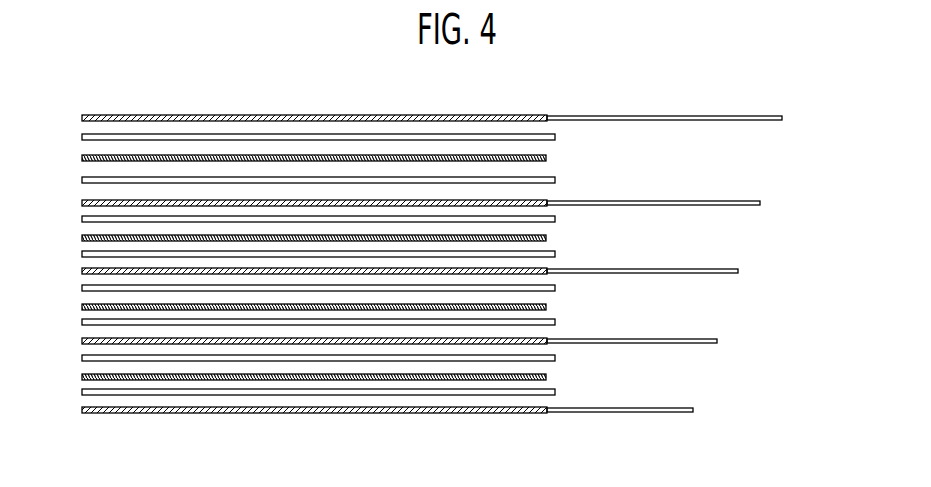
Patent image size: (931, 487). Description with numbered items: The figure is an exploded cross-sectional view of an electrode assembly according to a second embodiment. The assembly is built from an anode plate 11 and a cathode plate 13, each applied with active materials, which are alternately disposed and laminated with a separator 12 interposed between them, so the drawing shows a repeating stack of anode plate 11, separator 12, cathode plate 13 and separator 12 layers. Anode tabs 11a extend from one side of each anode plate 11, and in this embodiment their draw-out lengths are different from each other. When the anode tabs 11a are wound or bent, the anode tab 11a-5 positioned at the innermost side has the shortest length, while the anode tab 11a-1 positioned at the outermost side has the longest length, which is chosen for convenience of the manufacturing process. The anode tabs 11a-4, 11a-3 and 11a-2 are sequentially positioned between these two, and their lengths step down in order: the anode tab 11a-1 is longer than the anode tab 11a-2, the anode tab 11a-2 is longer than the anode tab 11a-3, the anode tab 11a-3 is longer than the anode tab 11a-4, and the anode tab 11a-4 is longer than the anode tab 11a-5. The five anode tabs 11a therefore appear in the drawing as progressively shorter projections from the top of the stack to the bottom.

The anode plate 11 is at (448, 269).
The separator 12 is at (82, 137).
The cathode plate 13 is at (82, 158).
The anode tabs 11a is at (863, 130).
The anode tab positioned at the outermost side 11a-1 is at (782, 118).
The anode tab 11a-2 is at (760, 203).
The anode tab 11a-3 is at (738, 271).
The anode tab 11a-4 is at (717, 341).
The anode tab positioned at the innermost side 11a-5 is at (693, 410).